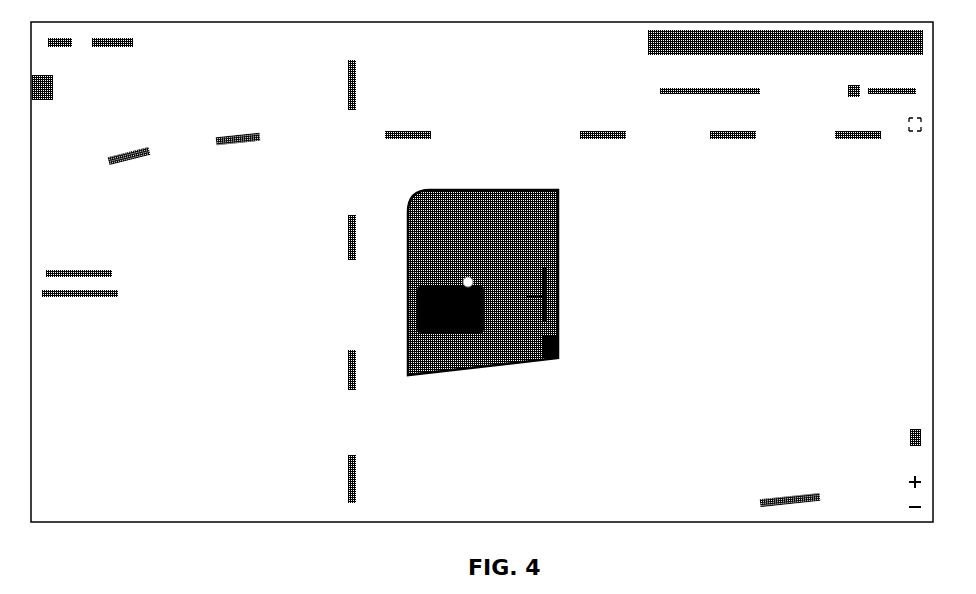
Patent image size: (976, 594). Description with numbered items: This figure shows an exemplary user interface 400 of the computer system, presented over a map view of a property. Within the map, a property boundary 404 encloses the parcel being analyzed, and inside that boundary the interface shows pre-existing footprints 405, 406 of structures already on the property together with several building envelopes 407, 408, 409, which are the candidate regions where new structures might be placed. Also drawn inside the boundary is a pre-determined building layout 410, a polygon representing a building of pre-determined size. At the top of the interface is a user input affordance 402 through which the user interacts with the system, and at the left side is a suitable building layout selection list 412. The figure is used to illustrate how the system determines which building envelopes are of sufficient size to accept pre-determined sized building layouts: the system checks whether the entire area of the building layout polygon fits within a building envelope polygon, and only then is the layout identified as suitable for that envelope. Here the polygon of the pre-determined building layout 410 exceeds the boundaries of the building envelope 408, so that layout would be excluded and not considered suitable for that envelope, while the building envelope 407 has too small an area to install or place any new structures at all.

The user interface 400 is at (232, 58).
The user input affordance 402 is at (648, 73).
The property boundary 404 is at (495, 189).
The pre-existing footprint 405 is at (552, 347).
The pre-existing footprint 406 is at (504, 251).
The building envelope 407 is at (552, 285).
The building envelope 408 is at (470, 318).
The building envelope 409 is at (552, 311).
The pre-determined building layout 410 is at (428, 312).
The suitable building layout selection list 412 is at (92, 263).